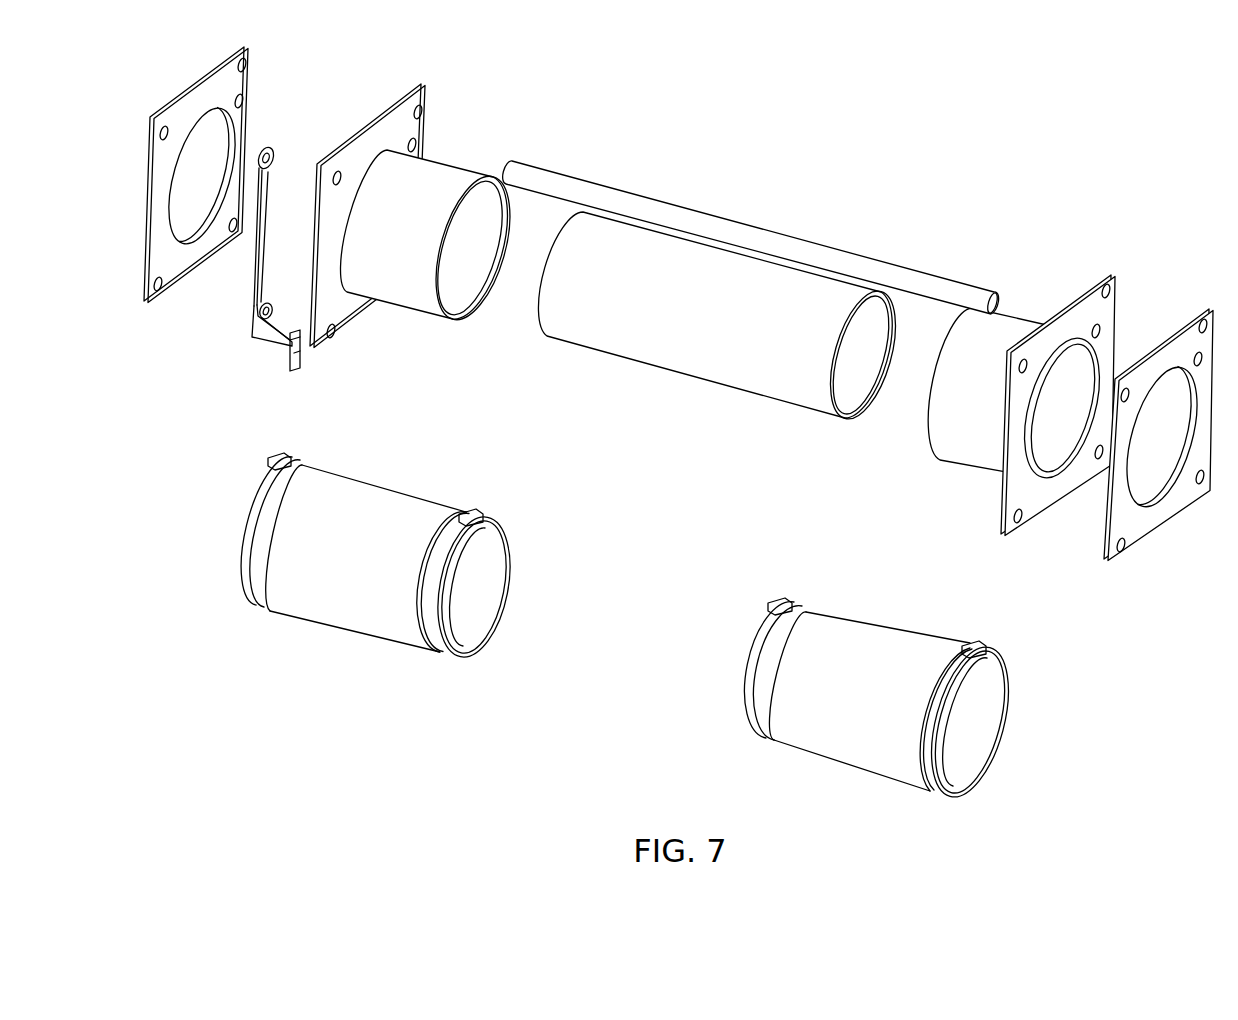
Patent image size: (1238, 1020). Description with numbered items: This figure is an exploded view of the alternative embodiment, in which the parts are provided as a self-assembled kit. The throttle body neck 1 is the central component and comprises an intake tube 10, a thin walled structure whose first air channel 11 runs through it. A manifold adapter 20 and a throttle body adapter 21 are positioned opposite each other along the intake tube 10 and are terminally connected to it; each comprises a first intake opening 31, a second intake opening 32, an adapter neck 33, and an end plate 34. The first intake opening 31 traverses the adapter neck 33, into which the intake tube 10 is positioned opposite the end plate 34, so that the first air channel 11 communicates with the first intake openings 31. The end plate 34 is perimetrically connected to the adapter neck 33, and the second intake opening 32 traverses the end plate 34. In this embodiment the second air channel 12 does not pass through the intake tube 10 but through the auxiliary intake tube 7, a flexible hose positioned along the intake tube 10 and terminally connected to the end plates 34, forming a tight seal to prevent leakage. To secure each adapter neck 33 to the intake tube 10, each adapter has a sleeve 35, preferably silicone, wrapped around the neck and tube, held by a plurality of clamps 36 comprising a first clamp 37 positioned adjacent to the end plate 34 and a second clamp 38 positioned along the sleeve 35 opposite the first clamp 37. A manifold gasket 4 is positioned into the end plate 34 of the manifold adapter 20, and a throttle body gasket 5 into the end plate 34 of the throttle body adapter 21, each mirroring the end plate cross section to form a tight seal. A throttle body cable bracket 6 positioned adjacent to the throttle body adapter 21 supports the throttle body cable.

The throttle body neck 1 is at (788, 126).
The manifold gasket 4 is at (1137, 535).
The throttle body gasket 5 is at (190, 103).
The throttle body cable bracket 6 is at (263, 332).
The rod 7 is at (786, 220).
The intake tube 10 is at (734, 330).
The first air channel 11 is at (866, 375).
The second air channel 12 is at (1001, 308).
The manifold adapter 20 is at (1086, 105).
The throttle body adapter 21 is at (330, 774).
The first intake opening 31 is at (470, 313).
The second intake opening 32 is at (416, 150).
The adapter neck 33 is at (376, 290).
The end plate 34 is at (741, 315).
The sleeve 35 is at (383, 497).
The plurality of clamps 36 is at (642, 605).
The first clamp 37 is at (247, 605).
The second clamp 38 is at (442, 655).